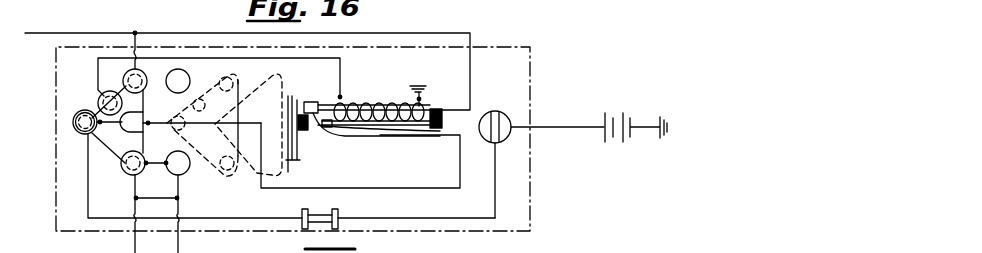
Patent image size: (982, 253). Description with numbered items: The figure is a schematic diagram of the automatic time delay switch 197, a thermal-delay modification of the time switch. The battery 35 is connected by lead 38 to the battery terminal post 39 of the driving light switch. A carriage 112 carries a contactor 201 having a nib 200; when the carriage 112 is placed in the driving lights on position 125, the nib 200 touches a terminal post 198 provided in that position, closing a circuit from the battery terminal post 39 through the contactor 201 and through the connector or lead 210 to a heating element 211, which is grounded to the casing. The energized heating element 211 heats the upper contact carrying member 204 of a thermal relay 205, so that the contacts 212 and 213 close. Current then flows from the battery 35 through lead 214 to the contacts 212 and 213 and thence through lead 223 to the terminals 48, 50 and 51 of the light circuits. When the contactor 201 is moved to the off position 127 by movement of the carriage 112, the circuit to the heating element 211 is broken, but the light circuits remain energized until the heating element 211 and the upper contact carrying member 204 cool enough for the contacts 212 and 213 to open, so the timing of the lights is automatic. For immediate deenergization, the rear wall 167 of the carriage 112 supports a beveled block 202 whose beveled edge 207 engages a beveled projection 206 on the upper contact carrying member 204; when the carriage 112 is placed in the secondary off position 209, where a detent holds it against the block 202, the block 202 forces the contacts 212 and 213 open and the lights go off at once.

The terminal 48 is at (127, 75).
The terminal post 198 is at (103, 94).
The nib 200 is at (99, 105).
The battery terminal post 39 is at (73, 132).
The driving lights on position 125 is at (100, 148).
The contactor 201 is at (117, 160).
The terminal 50 is at (126, 176).
The terminal 51 is at (167, 166).
The off position 127 is at (187, 173).
The connector or lead 210 is at (197, 58).
The lead 223 is at (396, 33).
The beveled block 202 is at (296, 96).
The beveled projection 206 is at (333, 100).
The upper contact carrying member 204 is at (340, 106).
The thermal relay 205 is at (407, 104).
The contact 212 is at (430, 110).
The secondary off position 209 is at (258, 79).
The rear wall 167 is at (300, 146).
The carriage 112 is at (297, 160).
The contact 213 is at (360, 127).
The beveled edge 207 is at (345, 137).
The lead 214 is at (384, 188).
The heating element 211 is at (430, 113).
The lead 38 is at (552, 127).
The battery 35 is at (622, 144).
The automatic time delay switch 197 is at (588, 194).